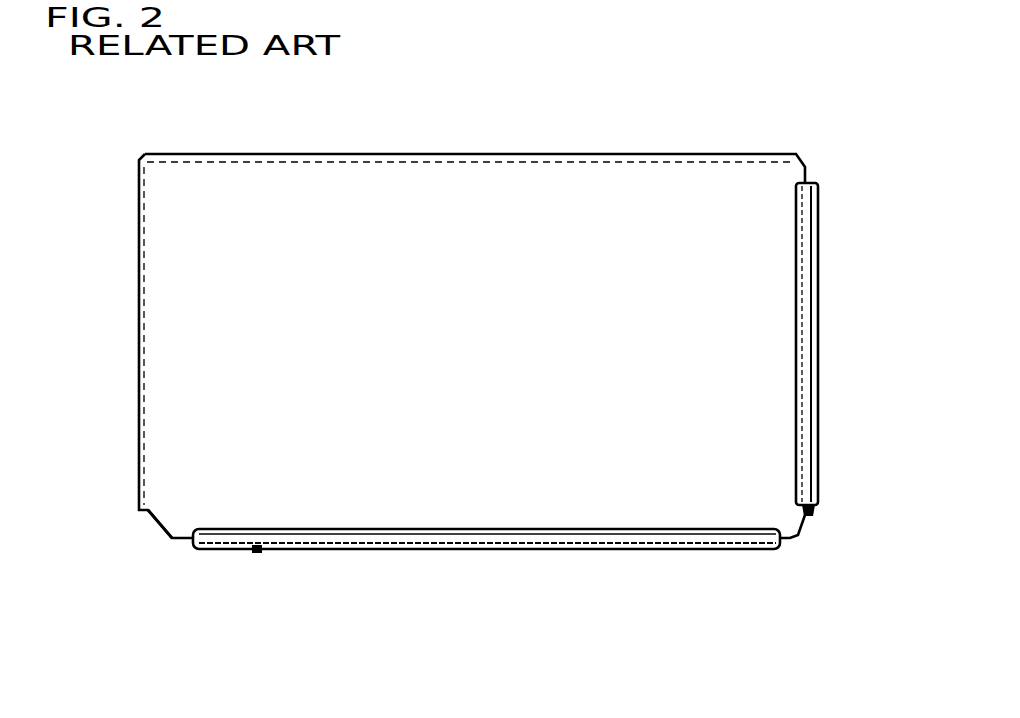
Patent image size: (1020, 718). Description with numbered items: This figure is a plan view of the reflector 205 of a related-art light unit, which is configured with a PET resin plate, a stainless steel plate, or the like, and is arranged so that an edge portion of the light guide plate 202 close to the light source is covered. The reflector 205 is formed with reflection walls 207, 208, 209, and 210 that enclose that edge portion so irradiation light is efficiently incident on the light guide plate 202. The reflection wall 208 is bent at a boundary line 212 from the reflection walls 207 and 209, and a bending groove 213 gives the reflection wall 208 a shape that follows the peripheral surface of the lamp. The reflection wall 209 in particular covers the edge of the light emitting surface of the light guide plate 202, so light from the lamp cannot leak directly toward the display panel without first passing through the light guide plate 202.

The light guide plate 202 is at (138, 533).
The reflector 205 is at (481, 346).
The reflection wall 207 is at (190, 237).
The reflection wall 208 is at (539, 408).
The reflection wall 209 is at (257, 553).
The reflection wall 210 is at (355, 153).
The boundary line 212 is at (437, 550).
The bending groove 213 is at (342, 550).